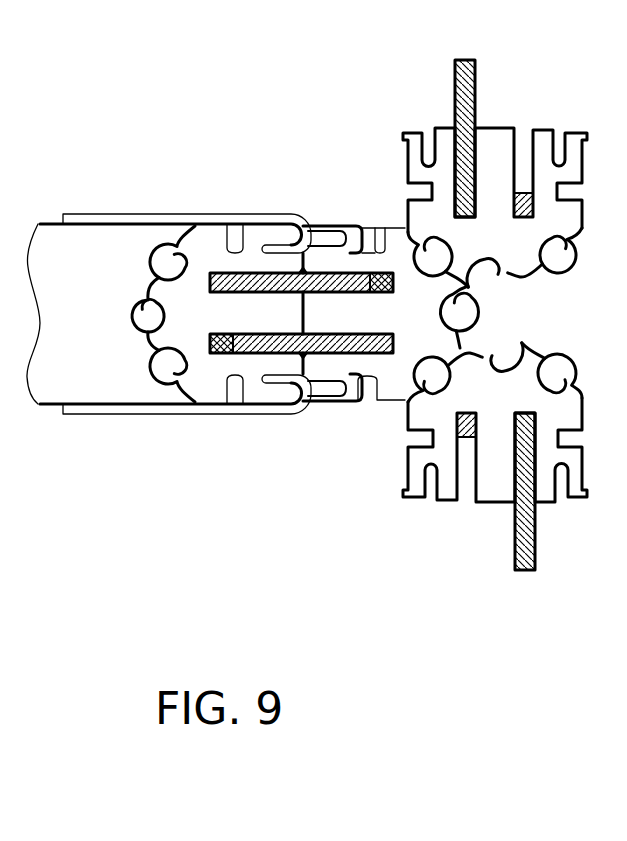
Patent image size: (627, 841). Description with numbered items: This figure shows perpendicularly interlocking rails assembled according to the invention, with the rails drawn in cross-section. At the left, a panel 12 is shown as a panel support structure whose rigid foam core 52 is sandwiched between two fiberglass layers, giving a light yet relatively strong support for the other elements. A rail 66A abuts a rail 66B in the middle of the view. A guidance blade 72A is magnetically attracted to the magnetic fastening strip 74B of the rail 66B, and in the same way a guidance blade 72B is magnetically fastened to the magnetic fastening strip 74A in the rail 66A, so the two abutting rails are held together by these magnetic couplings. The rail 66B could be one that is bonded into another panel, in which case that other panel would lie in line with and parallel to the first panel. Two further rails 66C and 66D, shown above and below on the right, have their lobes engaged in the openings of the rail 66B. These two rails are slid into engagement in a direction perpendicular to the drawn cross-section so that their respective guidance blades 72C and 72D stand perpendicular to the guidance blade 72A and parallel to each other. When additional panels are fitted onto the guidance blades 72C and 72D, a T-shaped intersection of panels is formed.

The panel 12 is at (84, 196).
The rigid foam core 52 is at (97, 331).
The rail 66A is at (240, 321).
The rail 66B is at (382, 321).
The rail 66C is at (518, 253).
The rail 66D is at (513, 404).
The guidance blade 72A is at (329, 225).
The guidance blade 72B is at (347, 374).
The guidance blade 72C is at (455, 72).
The guidance blade 72D is at (515, 560).
The magnetic fastening strip 74A is at (227, 378).
The magnetic fastening strip 74B is at (385, 228).